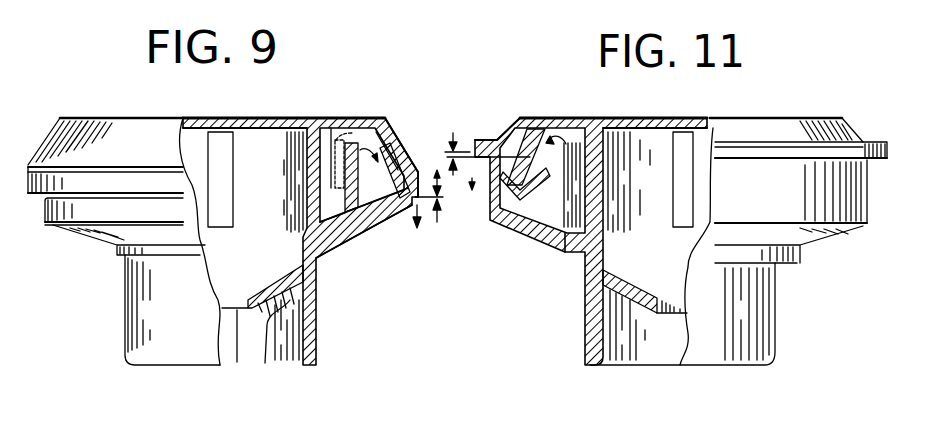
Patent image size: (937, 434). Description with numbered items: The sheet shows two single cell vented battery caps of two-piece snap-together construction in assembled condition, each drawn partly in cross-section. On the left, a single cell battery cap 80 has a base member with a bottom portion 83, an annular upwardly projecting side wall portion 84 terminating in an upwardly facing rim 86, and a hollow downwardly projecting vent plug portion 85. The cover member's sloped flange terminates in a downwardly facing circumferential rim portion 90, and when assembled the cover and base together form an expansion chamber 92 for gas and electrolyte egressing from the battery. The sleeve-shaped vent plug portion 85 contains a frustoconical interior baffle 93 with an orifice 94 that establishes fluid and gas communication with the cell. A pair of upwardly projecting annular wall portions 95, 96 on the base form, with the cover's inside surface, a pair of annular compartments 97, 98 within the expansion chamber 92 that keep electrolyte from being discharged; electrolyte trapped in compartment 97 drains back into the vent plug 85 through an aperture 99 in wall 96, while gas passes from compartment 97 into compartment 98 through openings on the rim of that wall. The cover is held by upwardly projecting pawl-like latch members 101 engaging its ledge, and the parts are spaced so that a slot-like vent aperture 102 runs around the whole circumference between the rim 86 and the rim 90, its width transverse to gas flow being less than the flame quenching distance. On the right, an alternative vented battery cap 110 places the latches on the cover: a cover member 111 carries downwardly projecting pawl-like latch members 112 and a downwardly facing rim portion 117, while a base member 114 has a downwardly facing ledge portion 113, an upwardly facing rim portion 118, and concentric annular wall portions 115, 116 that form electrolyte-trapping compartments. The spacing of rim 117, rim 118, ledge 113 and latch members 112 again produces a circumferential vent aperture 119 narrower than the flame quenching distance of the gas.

In FIG. 9, the single cell battery cap 80 is at (113, 106).
In FIG. 9, the bottom portion 83 is at (357, 232).
In FIG. 9, the side wall portion 84 is at (383, 215).
In FIG. 9, the vent plug portion 85 is at (315, 333).
In FIG. 9, the rim 86 is at (392, 173).
In FIG. 9, the rim portion 90 is at (347, 212).
In FIG. 9, the expansion chamber 92 is at (250, 160).
In FIG. 9, the interior baffle 93 is at (287, 365).
In FIG. 9, the orifice 94 is at (245, 297).
In FIG. 9, the annular wall portion 95 is at (307, 153).
In FIG. 9, the annular wall portion 96 is at (353, 143).
In FIG. 9, the annular compartment 97 is at (333, 187).
In FIG. 9, the annular compartment 98 is at (347, 157).
In FIG. 9, the aperture 99 is at (230, 148).
In FIG. 9, the latch member 101 is at (383, 120).
In FIG. 9, the vent aperture 102 is at (420, 222).
In FIG. 11, the vented battery cap 110 is at (783, 104).
In FIG. 11, the cover member 111 is at (687, 120).
In FIG. 11, the latch member 112 is at (530, 147).
In FIG. 11, the ledge portion 113 is at (567, 177).
In FIG. 11, the base member 114 is at (595, 322).
In FIG. 11, the annular wall portion 115 is at (590, 203).
In FIG. 11, the annular wall portion 116 is at (557, 225).
In FIG. 11, the rim portion 117 is at (508, 160).
In FIG. 11, the rim portion 118 is at (507, 220).
In FIG. 11, the vent aperture 119 is at (473, 147).